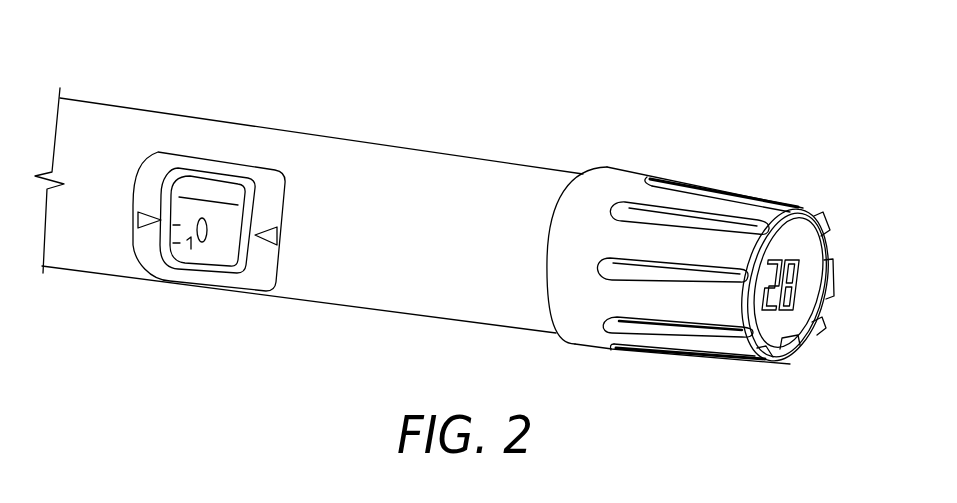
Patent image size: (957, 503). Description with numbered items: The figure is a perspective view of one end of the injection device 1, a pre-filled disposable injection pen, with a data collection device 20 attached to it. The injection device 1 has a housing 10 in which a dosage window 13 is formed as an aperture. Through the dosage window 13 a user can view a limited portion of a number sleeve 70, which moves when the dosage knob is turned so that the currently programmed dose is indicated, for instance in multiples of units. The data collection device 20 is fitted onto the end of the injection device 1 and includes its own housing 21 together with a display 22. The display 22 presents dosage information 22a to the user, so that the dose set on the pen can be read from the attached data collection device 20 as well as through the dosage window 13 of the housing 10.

The injection device 1 is at (83, 60).
The housing 10 is at (90, 273).
The dosage window 13 is at (241, 166).
The number sleeve 70 is at (202, 262).
The data collection device 20 is at (716, 270).
The housing 21 is at (620, 165).
The display 22 is at (814, 262).
The dosage information 22a is at (799, 304).